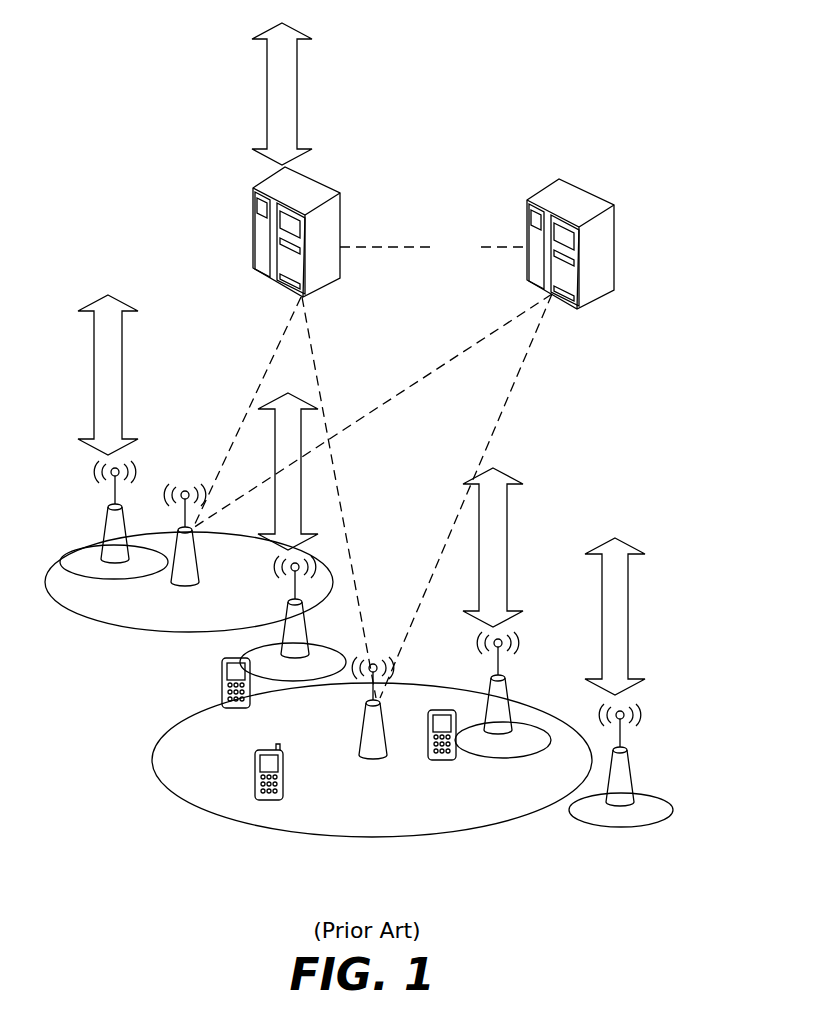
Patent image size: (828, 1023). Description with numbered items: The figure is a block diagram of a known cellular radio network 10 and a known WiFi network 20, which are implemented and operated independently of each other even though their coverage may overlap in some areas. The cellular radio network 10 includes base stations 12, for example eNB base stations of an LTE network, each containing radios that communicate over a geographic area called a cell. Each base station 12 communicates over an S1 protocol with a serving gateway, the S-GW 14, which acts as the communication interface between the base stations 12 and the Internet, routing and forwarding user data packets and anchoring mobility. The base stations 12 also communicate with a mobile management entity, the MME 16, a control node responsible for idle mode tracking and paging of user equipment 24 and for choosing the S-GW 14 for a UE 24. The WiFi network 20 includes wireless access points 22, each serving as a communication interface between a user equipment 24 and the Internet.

The cellular radio network 10 is at (420, 168).
The base station 12 is at (186, 492).
The serving gateway 14 is at (253, 245).
The mobile management entity 16 is at (590, 196).
The WiFi network 20 is at (631, 548).
The wireless access point 22 is at (106, 511).
The user equipment 24 is at (222, 696).